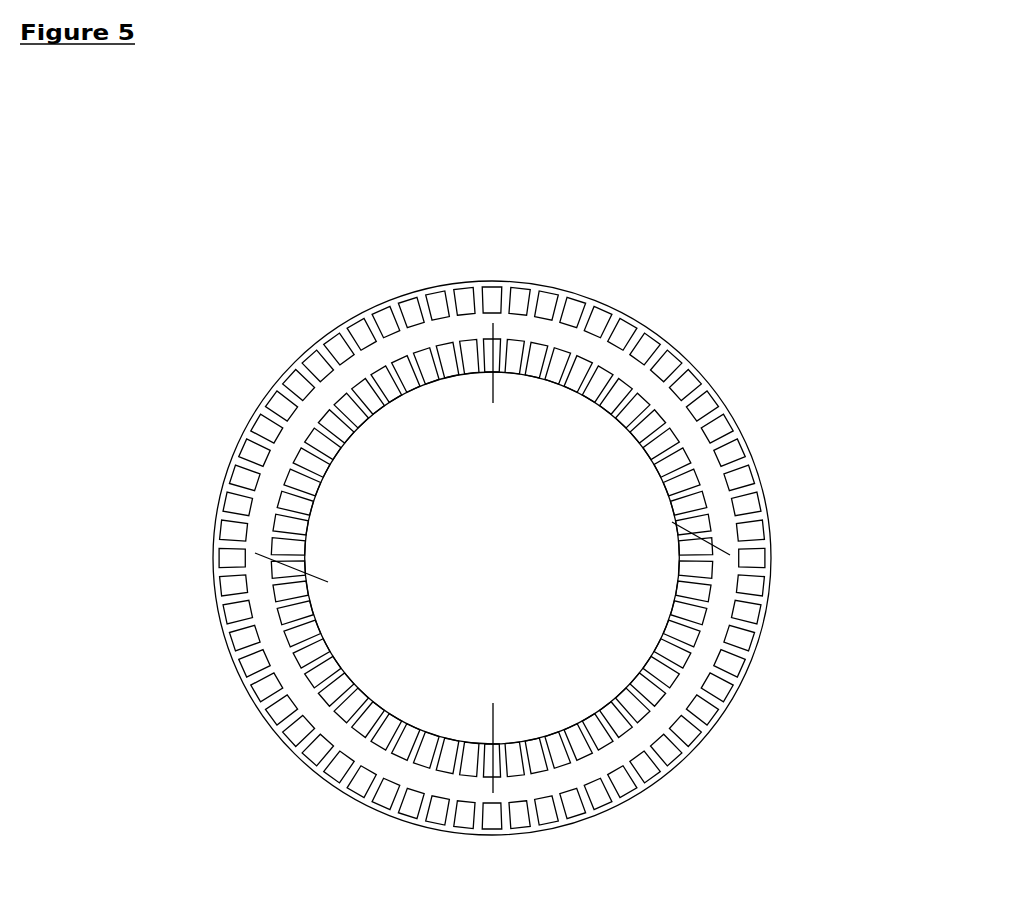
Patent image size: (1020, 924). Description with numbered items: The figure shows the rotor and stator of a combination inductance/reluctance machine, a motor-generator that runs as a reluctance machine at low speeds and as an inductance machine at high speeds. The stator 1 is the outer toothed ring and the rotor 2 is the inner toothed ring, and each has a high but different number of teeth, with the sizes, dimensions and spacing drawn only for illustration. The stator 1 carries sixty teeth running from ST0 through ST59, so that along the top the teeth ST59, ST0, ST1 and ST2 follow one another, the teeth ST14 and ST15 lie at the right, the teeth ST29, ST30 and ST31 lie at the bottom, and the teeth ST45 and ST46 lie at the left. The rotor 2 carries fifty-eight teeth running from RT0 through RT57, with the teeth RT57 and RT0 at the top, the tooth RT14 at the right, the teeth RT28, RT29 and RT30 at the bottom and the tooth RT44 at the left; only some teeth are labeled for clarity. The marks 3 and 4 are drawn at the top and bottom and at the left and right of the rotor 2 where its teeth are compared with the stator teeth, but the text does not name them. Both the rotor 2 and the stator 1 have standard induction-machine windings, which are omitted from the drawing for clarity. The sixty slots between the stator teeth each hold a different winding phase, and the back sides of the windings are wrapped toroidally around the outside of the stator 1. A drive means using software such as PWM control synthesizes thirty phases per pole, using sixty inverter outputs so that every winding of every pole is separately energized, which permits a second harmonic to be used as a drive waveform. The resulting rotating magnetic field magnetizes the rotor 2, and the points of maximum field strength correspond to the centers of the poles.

The stator 1 is at (772, 508).
The rotor 2 is at (501, 558).
The rotor tooth / stator slot alignment line 3 is at (492, 403).
The rotor tooth / stator slot offset line 4 is at (328, 582).
The stator tooth ST0 is at (495, 297).
The stator tooth ST1 is at (522, 297).
The stator tooth ST2 is at (552, 297).
The stator tooth ST14 is at (748, 530).
The stator tooth ST15 is at (748, 558).
The stator tooth ST29 is at (520, 823).
The stator tooth ST30 is at (492, 822).
The stator tooth ST31 is at (465, 823).
The stator tooth ST45 is at (240, 557).
The stator tooth ST46 is at (240, 530).
The stator tooth ST59 is at (467, 297).
The rotor tooth RT0 is at (500, 360).
The rotor tooth RT14 is at (697, 543).
The rotor tooth RT28 is at (498, 752).
The rotor tooth RT29 is at (475, 751).
The rotor tooth RT30 is at (443, 741).
The rotor tooth RT44 is at (292, 546).
The rotor tooth RT57 is at (475, 362).